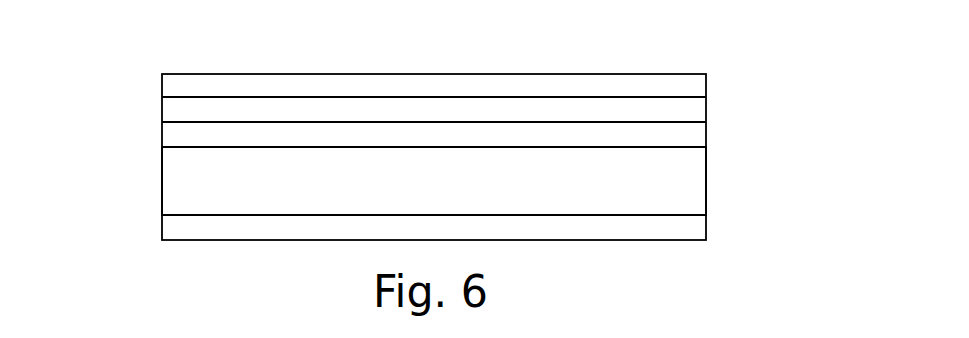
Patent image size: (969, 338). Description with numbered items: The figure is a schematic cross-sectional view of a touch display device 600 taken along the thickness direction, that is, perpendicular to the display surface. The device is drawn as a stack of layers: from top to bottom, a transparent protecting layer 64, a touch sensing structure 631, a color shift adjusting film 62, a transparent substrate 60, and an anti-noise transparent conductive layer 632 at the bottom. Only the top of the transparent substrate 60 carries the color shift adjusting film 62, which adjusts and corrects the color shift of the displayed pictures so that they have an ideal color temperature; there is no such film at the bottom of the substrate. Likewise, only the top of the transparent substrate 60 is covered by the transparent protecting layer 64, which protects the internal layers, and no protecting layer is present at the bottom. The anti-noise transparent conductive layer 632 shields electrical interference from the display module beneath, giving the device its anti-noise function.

The touch display device 600 is at (622, 54).
The transparent protecting layer 64 is at (179, 86).
The touch sensing structure 631 is at (687, 109).
The color shift adjusting film 62 is at (176, 134).
The transparent substrate 60 is at (683, 181).
The anti-noise transparent conductive layer 632 is at (179, 229).